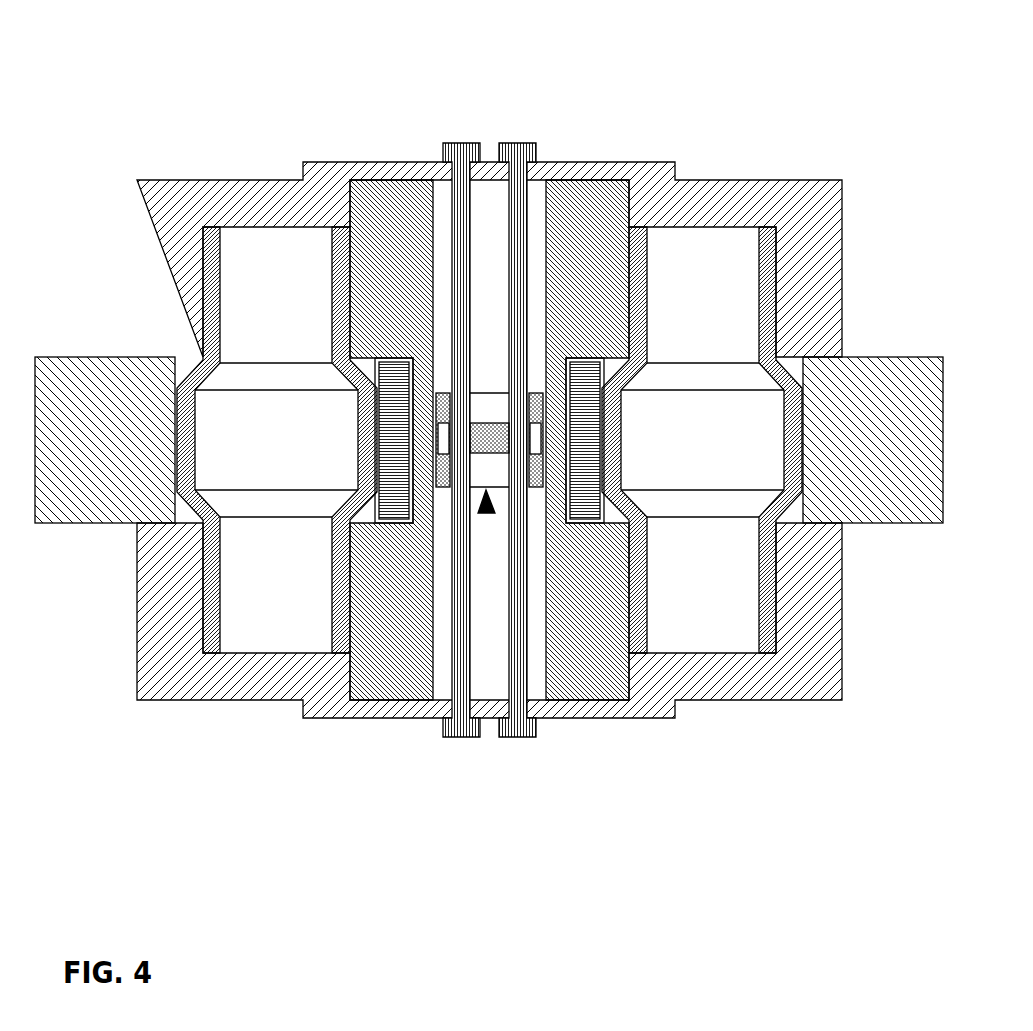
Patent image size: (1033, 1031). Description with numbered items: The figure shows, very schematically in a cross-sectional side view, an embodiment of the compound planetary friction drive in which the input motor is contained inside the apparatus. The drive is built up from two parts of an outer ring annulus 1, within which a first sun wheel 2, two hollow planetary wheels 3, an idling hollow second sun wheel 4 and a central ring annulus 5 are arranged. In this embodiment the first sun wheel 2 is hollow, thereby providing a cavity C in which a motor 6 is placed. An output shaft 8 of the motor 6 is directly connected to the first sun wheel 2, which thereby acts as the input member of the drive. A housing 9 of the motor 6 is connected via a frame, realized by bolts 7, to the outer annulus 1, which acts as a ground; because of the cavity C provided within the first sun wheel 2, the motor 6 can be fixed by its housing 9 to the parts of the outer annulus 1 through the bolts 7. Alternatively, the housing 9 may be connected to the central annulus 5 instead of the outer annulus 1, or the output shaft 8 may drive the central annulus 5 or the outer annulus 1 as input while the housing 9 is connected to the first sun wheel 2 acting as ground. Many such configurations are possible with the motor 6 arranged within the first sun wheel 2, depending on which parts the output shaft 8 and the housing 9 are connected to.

The outer ring annulus 1 is at (822, 233).
The first sun wheel 2 is at (568, 213).
The hollow planetary wheels 3 is at (268, 450).
The idling hollow second sun wheel 4 is at (593, 395).
The central ring annulus 5 is at (98, 452).
The motor 6 is at (487, 513).
The bolts 7 is at (465, 230).
The output shaft 8 is at (535, 477).
The housing 9 is at (488, 440).
The cavity C is at (492, 207).